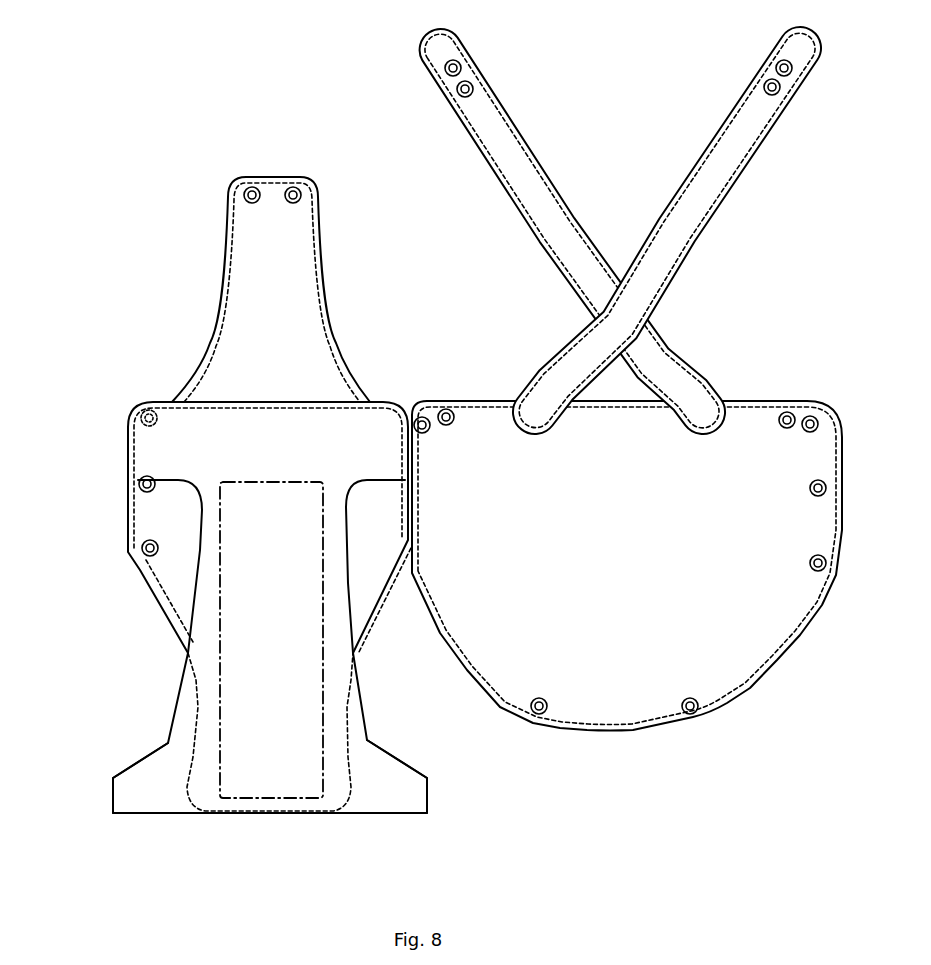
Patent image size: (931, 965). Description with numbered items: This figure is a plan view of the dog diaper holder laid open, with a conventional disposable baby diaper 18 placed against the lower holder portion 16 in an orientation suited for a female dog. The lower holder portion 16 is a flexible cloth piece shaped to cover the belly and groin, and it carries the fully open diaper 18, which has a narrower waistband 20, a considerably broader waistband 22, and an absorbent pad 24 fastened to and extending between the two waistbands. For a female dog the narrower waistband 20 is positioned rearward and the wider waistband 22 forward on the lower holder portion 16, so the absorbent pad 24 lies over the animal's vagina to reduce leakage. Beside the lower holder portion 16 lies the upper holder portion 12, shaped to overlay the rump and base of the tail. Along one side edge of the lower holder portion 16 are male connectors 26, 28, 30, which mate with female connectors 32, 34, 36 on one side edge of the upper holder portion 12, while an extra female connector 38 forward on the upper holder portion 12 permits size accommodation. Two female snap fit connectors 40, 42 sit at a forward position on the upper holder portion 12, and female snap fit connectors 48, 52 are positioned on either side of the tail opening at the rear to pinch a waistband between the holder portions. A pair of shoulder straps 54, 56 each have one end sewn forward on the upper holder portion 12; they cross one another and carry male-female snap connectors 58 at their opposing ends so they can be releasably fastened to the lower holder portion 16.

The upper holder portion 12 is at (733, 647).
The lower holder portion 16 is at (358, 608).
The diaper 18 is at (133, 378).
The waistband 20 is at (395, 788).
The waistband 22 is at (367, 417).
The absorbent pad 24 is at (271, 640).
The male connector 26 is at (122, 409).
The male connector 28 is at (139, 481).
The male connector 30 is at (141, 546).
The female connector 32 is at (805, 429).
The female connector 34 is at (809, 488).
The female connector 36 is at (810, 562).
The female connector 38 is at (785, 411).
The female snap fit connector 40 is at (420, 416).
The female snap fit connector 42 is at (445, 408).
The female snap fit connector 48 is at (697, 713).
The female snap fit connector 52 is at (545, 713).
The shoulder strap 54 is at (690, 198).
The shoulder strap 56 is at (518, 170).
The male-female snap connectors 58 is at (252, 186).